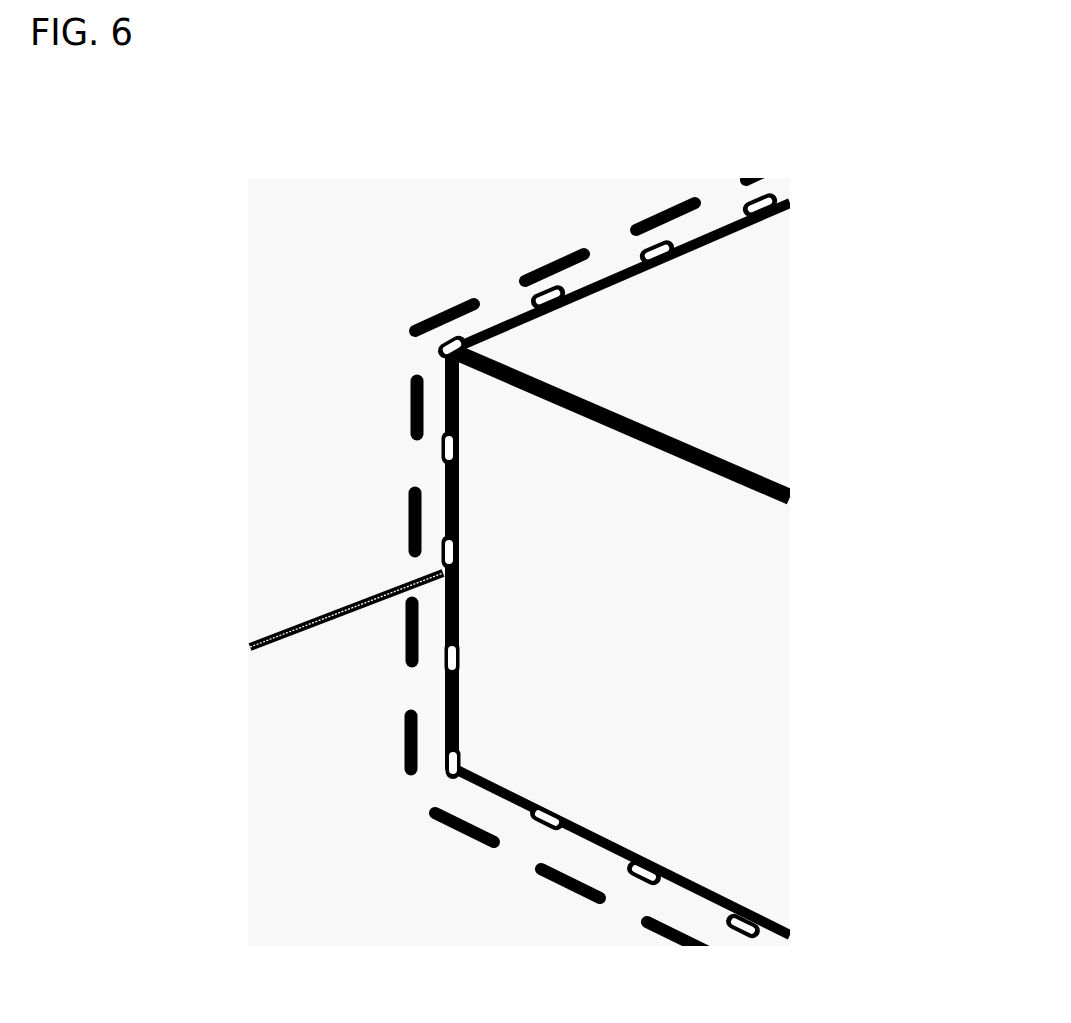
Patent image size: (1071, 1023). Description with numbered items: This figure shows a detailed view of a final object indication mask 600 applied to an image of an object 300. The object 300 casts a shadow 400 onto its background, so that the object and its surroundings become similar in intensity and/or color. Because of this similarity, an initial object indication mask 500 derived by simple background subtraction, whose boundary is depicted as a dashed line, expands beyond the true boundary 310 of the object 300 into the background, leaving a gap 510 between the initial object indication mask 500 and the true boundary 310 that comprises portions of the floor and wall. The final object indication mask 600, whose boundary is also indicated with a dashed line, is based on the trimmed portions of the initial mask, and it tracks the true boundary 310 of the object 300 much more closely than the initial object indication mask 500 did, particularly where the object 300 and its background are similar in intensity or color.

The object 300 is at (715, 660).
The true boundary 310 is at (445, 507).
The shadow 400 is at (325, 345).
The initial object indication mask 500 is at (410, 403).
The gap 510 is at (434, 738).
The final object indication mask 600 is at (441, 455).